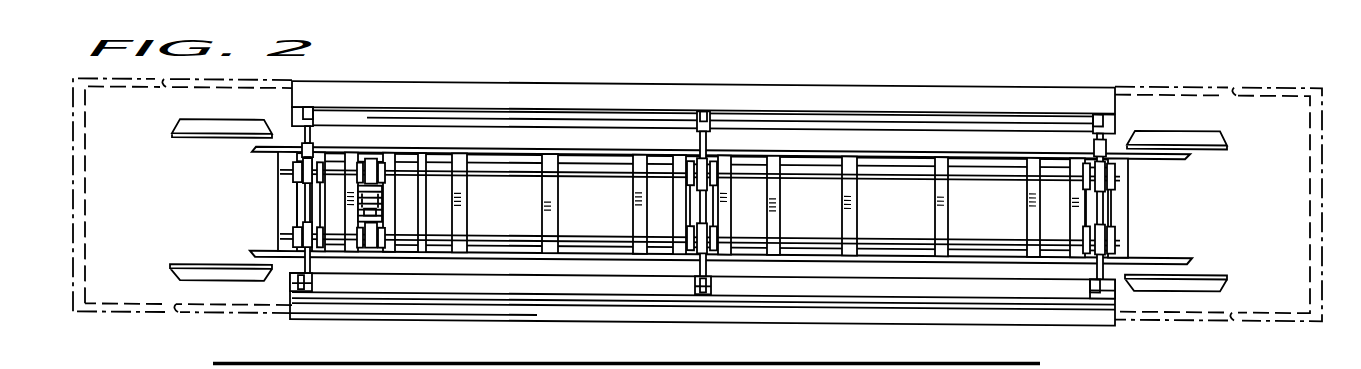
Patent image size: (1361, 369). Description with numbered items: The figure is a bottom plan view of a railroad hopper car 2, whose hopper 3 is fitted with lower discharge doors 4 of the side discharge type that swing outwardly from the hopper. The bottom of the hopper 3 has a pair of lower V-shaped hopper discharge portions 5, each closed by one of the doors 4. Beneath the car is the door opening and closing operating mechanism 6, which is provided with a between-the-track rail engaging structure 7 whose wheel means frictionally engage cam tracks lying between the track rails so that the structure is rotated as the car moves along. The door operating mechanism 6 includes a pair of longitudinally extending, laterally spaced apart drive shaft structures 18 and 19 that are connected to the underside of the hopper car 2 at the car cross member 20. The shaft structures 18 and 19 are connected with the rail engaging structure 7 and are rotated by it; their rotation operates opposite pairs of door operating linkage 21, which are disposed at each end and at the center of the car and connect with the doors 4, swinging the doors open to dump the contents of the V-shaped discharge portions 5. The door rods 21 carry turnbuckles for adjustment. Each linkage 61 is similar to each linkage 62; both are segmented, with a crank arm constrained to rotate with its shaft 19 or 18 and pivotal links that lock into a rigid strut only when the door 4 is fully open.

The railroad hopper car 2 is at (940, 78).
The hopper 3 is at (372, 81).
The lower discharge doors 4 is at (403, 93).
The V-shaped hopper discharge portions 5 is at (535, 92).
The door operating mechanism 6 is at (758, 169).
The between-the-track rail engaging structure 7 is at (388, 204).
The drive shaft structure 18 is at (603, 168).
The drive shaft structure 19 is at (584, 240).
The car cross member 20 is at (392, 193).
The door operating linkage 21 is at (317, 133).
The linkage 61 is at (293, 160).
The linkage 62 is at (307, 232).